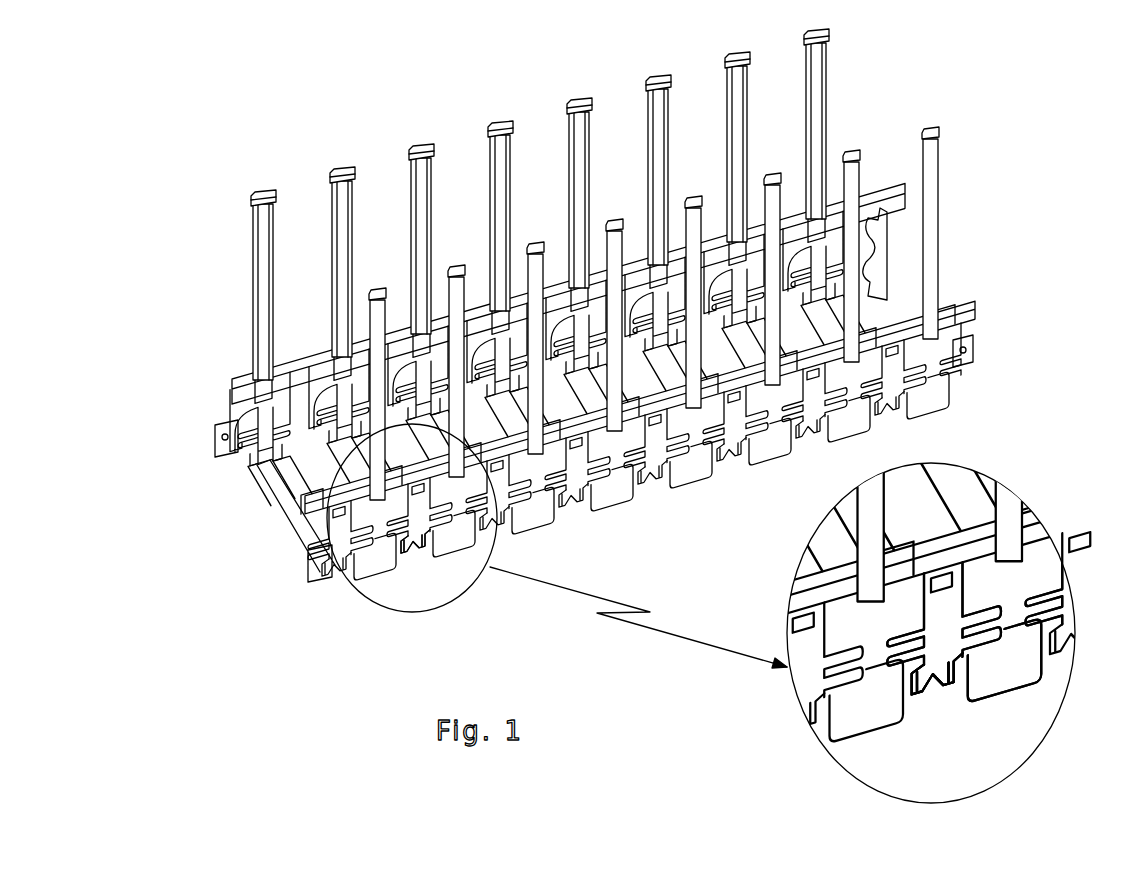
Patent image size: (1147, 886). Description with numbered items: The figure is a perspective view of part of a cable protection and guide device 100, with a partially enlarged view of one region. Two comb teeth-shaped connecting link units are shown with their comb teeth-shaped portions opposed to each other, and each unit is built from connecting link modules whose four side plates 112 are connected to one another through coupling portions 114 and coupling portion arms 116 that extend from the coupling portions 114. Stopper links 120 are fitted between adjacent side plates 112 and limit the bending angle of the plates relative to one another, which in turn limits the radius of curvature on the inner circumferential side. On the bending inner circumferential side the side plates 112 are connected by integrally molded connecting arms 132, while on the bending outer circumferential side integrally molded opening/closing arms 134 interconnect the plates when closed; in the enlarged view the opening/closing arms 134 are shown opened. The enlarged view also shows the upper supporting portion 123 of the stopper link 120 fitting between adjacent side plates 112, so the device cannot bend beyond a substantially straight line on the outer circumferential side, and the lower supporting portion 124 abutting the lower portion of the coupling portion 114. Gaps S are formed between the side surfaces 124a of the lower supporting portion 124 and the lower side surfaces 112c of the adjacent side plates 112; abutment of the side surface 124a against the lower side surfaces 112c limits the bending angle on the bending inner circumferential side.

The cable protection and guide device 100 is at (638, 428).
The side plate 112 is at (267, 413).
The lower side surface 112c is at (950, 623).
The coupling portion 114 is at (963, 643).
The coupling portion arm 116 is at (987, 593).
The stopper link 120 is at (300, 405).
The upper supporting portion 123 is at (1047, 570).
The lower supporting portion 124 is at (938, 700).
The side surface 124a is at (913, 683).
The connecting arm 132 is at (285, 483).
The opening/closing arm 134 is at (268, 227).
The gap S is at (437, 558).